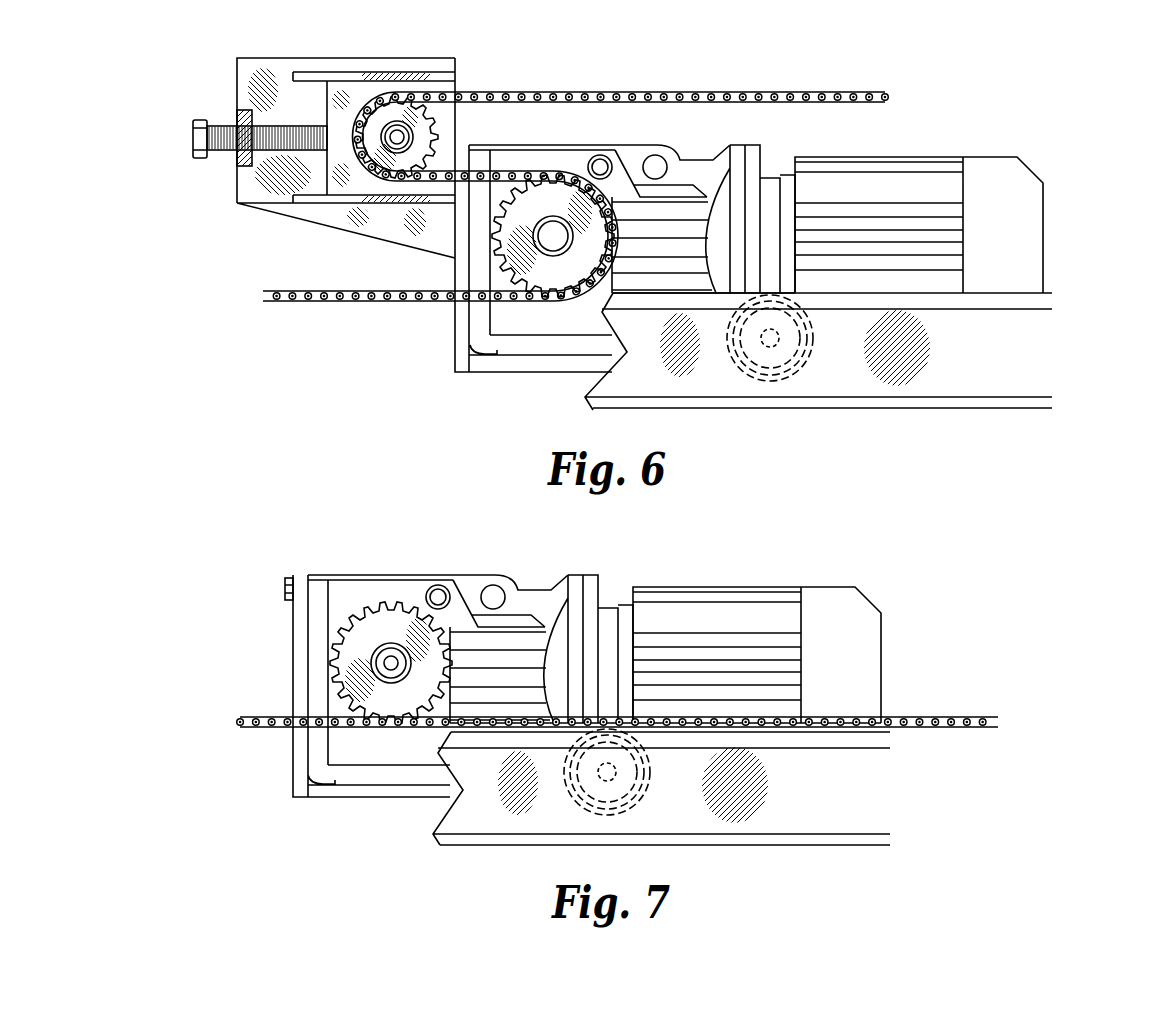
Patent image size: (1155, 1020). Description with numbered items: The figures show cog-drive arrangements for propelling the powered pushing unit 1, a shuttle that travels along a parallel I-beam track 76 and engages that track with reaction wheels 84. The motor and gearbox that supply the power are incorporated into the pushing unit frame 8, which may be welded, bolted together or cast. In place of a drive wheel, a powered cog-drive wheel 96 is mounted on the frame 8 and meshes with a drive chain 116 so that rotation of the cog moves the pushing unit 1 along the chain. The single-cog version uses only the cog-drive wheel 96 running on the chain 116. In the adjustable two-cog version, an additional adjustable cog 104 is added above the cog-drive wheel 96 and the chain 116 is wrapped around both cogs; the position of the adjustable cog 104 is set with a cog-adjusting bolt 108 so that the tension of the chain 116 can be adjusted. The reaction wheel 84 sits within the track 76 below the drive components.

In FIG. 6, the powered pushing unit 1 is at (648, 262).
In FIG. 7, the powered pushing unit 1 is at (604, 737).
In FIG. 6, the pushing unit frame 8 is at (547, 347).
In FIG. 7, the pushing unit frame 8 is at (383, 790).
In FIG. 6, the I-beam track 76 is at (1007, 352).
In FIG. 7, the I-beam track 76 is at (857, 803).
In FIG. 6, the reaction wheel 84 is at (783, 353).
In FIG. 7, the reaction wheel 84 is at (623, 780).
In FIG. 6, the powered cog-drive wheel 96 is at (517, 214).
In FIG. 7, the powered cog-drive wheel 96 is at (358, 647).
In FIG. 6, the adjustable cog 104 is at (386, 176).
In FIG. 6, the cog-adjusting bolt 108 is at (281, 147).
In FIG. 6, the drive chain 116 is at (567, 90).
In FIG. 7, the drive chain 116 is at (925, 717).